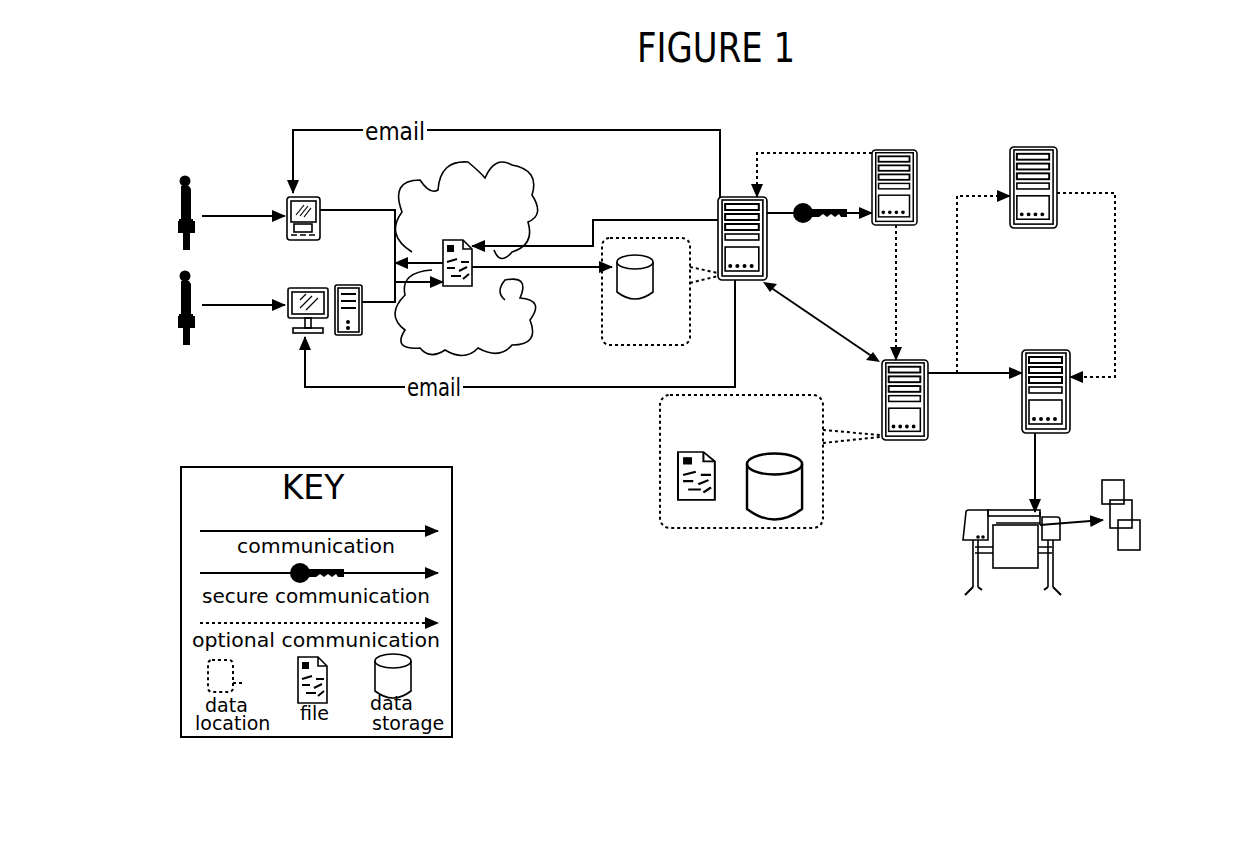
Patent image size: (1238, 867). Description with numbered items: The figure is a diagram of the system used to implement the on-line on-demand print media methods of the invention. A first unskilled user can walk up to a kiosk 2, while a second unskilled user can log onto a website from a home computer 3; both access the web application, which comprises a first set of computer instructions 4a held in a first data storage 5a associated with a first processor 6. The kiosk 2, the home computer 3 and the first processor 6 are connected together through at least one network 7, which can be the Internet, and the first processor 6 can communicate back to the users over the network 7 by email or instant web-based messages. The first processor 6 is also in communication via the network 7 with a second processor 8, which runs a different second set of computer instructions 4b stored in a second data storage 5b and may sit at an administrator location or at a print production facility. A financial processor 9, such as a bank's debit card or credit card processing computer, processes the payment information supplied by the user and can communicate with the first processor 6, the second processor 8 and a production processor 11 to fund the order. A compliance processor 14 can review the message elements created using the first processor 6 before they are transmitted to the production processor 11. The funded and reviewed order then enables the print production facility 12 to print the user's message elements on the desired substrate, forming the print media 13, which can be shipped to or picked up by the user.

The kiosk 2 is at (307, 195).
The home computer 3 is at (345, 286).
The first set of computer instructions 4a is at (457, 287).
The second set of computer instructions 4b is at (693, 453).
The first data storage 5a is at (635, 298).
The second data storage 5b is at (775, 451).
The first processor 6 is at (718, 202).
The network 7 is at (524, 172).
The second processor 8 is at (928, 400).
The financial processor 9 is at (917, 165).
The production processor 11 is at (1070, 398).
The print production facility 12 is at (965, 512).
The print media 13 is at (1132, 502).
The compliance processor 14 is at (1057, 165).